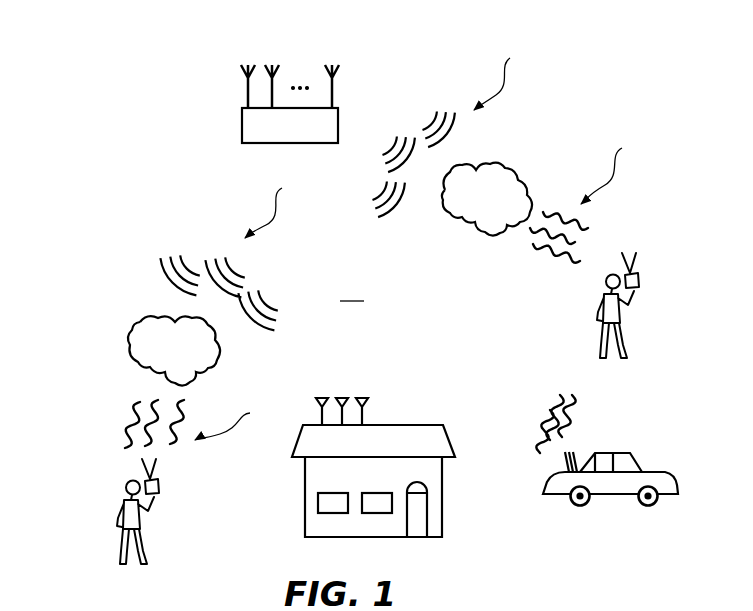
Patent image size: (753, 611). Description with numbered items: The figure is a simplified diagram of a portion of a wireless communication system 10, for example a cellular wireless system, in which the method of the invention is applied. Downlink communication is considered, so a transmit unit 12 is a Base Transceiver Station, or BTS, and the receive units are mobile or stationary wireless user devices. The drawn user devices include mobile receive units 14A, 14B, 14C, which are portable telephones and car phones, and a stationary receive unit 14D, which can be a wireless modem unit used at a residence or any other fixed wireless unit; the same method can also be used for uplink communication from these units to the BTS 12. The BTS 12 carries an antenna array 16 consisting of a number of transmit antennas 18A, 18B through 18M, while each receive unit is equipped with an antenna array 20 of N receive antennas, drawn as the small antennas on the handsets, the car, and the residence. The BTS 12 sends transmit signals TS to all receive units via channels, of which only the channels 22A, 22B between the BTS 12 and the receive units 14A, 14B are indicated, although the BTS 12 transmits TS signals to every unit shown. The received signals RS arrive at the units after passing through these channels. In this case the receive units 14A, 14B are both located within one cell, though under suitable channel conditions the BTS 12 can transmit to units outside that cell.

The wireless communication system 10 is at (619, 86).
The transmit unit 12 is at (242, 124).
The mobile receive unit 14A is at (640, 280).
The mobile receive unit 14B is at (160, 486).
The mobile receive unit 14C is at (664, 472).
The stationary receive unit 14D is at (393, 425).
The antenna array 16 is at (182, 76).
The transmit antenna 18A is at (246, 90).
The transmit antenna 18B is at (274, 87).
The transmit antenna 18M is at (340, 80).
The antenna array 20 is at (647, 250).
The channel 22A is at (462, 219).
The channel 22B is at (142, 318).